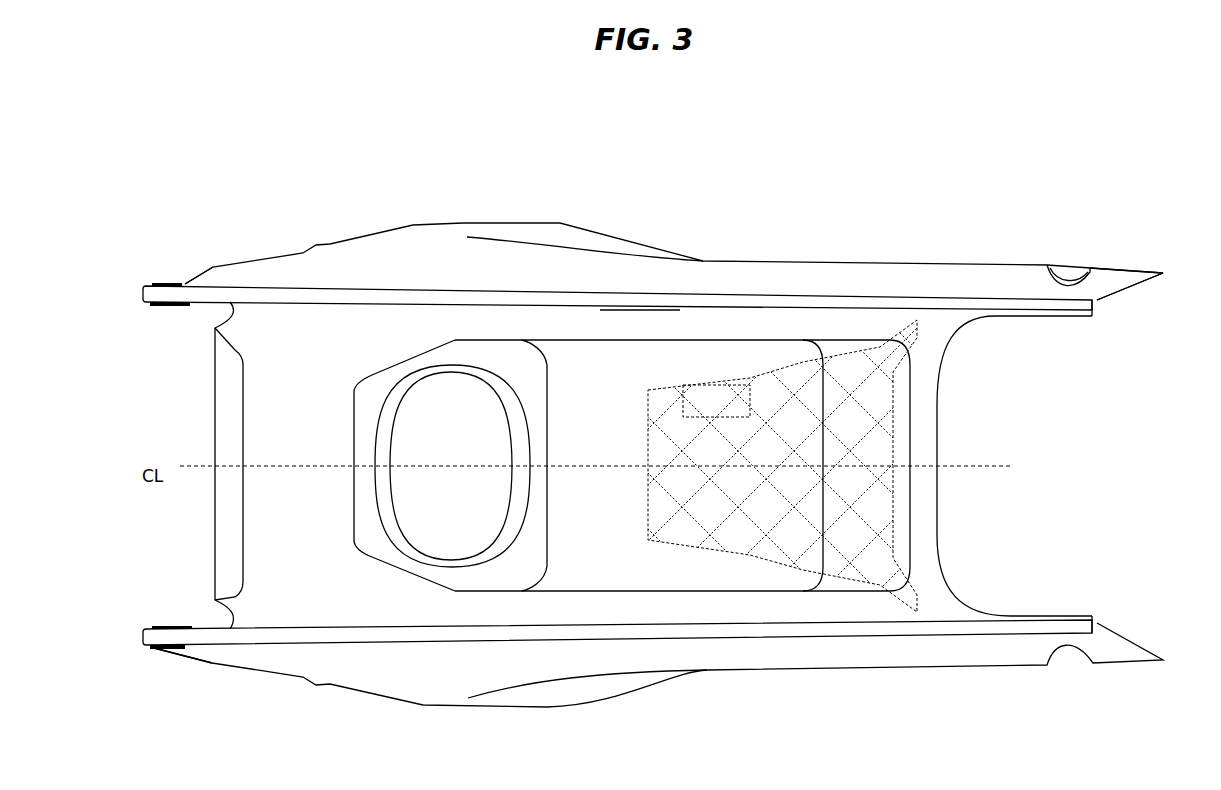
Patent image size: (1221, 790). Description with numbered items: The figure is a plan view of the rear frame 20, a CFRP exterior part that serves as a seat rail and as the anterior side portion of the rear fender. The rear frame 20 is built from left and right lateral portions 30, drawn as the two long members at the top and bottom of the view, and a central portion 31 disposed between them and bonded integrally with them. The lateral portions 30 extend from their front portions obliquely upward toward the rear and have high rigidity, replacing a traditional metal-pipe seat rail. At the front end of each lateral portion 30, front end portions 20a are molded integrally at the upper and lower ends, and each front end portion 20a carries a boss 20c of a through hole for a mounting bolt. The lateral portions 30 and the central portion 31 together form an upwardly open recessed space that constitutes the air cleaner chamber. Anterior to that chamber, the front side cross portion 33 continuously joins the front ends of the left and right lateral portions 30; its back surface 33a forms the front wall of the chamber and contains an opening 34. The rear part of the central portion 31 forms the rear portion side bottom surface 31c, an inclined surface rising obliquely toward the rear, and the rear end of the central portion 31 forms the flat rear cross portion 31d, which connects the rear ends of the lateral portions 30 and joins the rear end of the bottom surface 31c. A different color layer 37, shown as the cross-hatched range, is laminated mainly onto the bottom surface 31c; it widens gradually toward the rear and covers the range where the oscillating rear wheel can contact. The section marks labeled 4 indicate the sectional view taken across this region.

The rear frame 20 is at (370, 210).
The front end portion 20a is at (188, 279).
The boss 20c is at (172, 307).
The lateral portion 30 is at (800, 273).
The central portion 31 is at (212, 398).
The rear portion side bottom surface 31c is at (637, 365).
The rear cross portion 31d is at (897, 425).
The front side cross portion 33 is at (323, 510).
The back surface 33a is at (365, 495).
The opening 34 is at (466, 433).
The different color layer 37 is at (887, 500).
The section line indicator for FIG. 4 is at (750, 381).